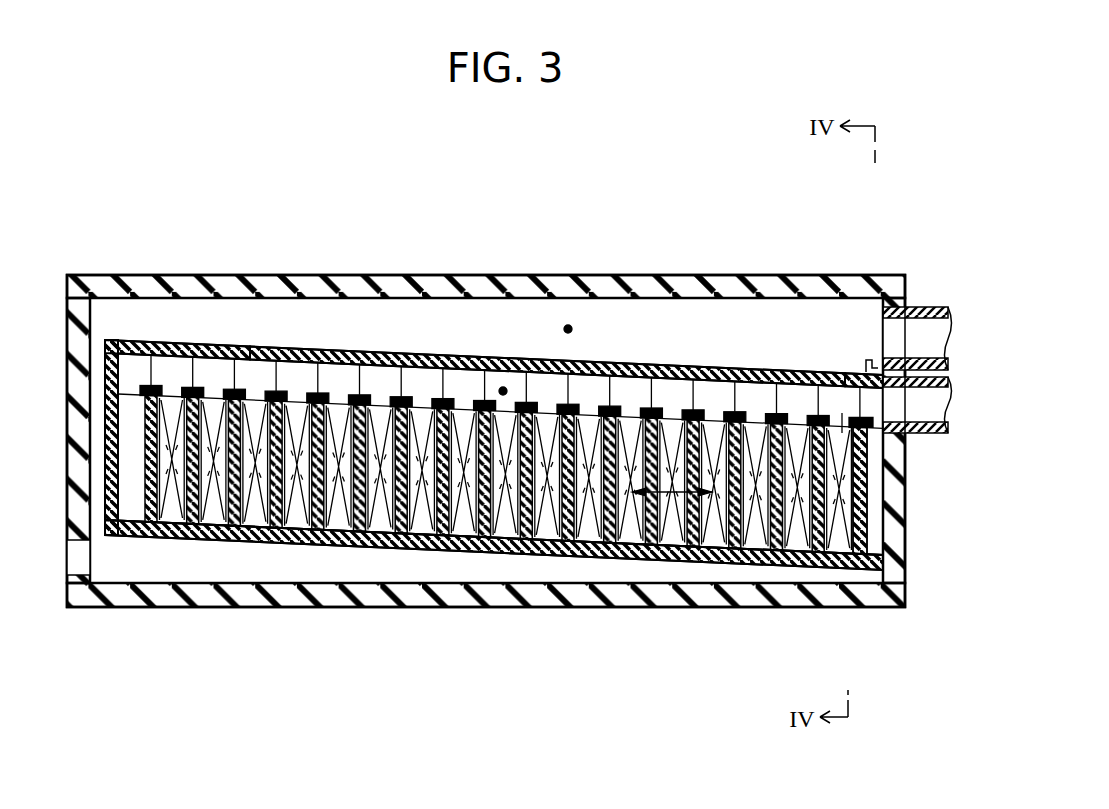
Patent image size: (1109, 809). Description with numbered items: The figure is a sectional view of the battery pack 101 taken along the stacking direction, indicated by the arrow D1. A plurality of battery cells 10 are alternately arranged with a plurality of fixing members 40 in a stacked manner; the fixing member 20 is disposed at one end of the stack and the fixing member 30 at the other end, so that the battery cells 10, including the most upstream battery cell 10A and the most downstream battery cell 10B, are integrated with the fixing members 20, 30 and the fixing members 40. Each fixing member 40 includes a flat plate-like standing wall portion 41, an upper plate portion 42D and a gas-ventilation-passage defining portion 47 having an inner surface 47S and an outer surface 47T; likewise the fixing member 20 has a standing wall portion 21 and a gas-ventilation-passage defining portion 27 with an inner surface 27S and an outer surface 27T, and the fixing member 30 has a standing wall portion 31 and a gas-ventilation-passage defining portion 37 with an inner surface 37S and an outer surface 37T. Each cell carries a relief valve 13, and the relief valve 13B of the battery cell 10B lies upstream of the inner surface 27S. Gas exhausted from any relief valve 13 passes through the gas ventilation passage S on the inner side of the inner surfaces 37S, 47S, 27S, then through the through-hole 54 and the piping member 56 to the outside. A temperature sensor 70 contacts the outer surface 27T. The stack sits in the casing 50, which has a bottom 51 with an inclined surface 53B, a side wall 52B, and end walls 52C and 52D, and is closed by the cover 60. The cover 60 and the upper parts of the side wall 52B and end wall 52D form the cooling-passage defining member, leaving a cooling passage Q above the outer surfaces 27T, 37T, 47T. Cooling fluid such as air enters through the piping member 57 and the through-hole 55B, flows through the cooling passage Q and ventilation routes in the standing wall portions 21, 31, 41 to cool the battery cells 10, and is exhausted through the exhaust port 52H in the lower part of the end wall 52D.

The battery pack 101 is at (188, 193).
The battery cell 10 is at (297, 537).
The battery cell 10A is at (127, 500).
The battery cell 10B is at (838, 530).
The relief valve 13 is at (465, 409).
The relief valve 13B is at (840, 424).
The fixing member 20 is at (872, 547).
The standing wall portion 21 is at (856, 556).
The gas-ventilation-passage defining portion 27 is at (872, 378).
The inner surface 27S is at (868, 384).
The outer surface 27T is at (866, 370).
The fixing member 30 is at (122, 508).
The standing wall portion 31 is at (106, 518).
The gas-ventilation-passage defining portion 37 is at (133, 342).
The inner surface 37S is at (170, 355).
The outer surface 37T is at (170, 355).
The fixing member 40 is at (484, 532).
The standing wall portion 41 is at (355, 522).
The upper plate portion 42D is at (277, 391).
The gas-ventilation-passage defining portion 47 is at (337, 351).
The inner surface 47S is at (360, 370).
The outer surface 47T is at (360, 370).
The casing 50 is at (494, 598).
The bottom 51 is at (462, 548).
The inclined surface 53B is at (372, 560).
The side wall 52B is at (663, 332).
The end wall 52C is at (897, 545).
The end wall 52D is at (77, 340).
The exhaust port 52H is at (78, 558).
The through-hole 54 is at (895, 405).
The through-hole 55B is at (893, 327).
The piping member 56 is at (932, 405).
The piping member 57 is at (926, 330).
The cover 60 is at (604, 286).
The temperature sensor 70 is at (870, 358).
The gas ventilation passage S is at (503, 387).
The cooling passage Q is at (568, 325).
The stacking direction D1 is at (670, 497).